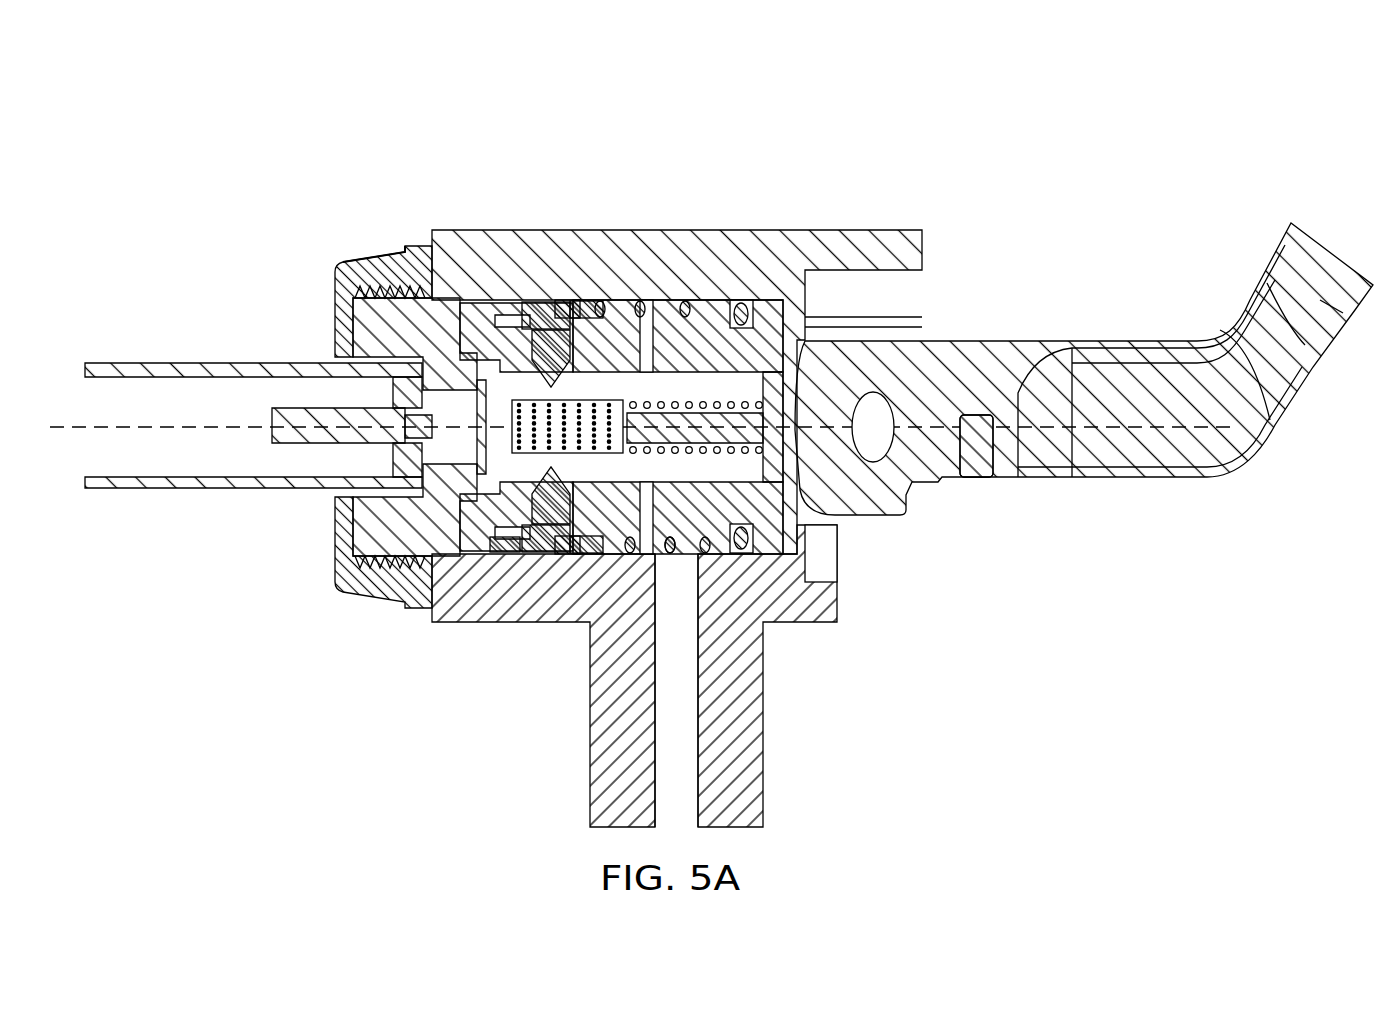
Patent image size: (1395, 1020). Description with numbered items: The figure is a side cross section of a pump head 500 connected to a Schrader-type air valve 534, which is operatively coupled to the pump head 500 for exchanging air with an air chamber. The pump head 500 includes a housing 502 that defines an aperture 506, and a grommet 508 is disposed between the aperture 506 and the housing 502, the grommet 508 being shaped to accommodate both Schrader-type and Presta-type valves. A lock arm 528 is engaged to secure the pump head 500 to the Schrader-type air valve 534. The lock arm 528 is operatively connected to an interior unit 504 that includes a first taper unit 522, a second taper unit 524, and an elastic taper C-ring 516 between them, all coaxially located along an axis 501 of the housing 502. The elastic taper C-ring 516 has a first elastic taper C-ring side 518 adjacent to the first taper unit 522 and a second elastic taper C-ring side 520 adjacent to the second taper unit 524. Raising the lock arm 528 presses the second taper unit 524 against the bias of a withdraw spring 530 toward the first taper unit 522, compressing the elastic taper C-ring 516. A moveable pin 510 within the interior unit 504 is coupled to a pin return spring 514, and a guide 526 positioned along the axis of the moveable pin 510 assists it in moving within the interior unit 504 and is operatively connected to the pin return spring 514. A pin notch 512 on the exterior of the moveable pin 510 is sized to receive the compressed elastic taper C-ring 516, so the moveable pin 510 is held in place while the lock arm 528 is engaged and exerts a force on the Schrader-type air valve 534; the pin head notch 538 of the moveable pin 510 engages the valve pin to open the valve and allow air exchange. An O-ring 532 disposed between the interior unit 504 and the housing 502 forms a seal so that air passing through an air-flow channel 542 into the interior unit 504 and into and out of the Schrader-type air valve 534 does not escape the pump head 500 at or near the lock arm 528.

The pump head 500 is at (1166, 86).
The axis 501 is at (150, 428).
The housing 502 is at (893, 247).
The interior unit 504 is at (450, 552).
The aperture 506 is at (354, 433).
The grommet 508 is at (364, 268).
The moveable pin 510 is at (515, 398).
The pin notch 512 is at (600, 315).
The pin return spring 514 is at (657, 405).
The elastic taper C-ring 516 is at (553, 390).
The first elastic taper C-ring side 518 is at (508, 548).
The second elastic taper C-ring side 520 is at (565, 538).
The first taper unit 522 is at (455, 290).
The second taper unit 524 is at (763, 310).
The guide 526 is at (708, 400).
The lock arm 528 is at (1112, 455).
The withdraw spring 530 is at (715, 553).
The O-ring 532 is at (662, 550).
The Schrader-type air valve 534 is at (115, 385).
The pin head notch 538 is at (407, 556).
The air-flow channel 542 is at (667, 640).